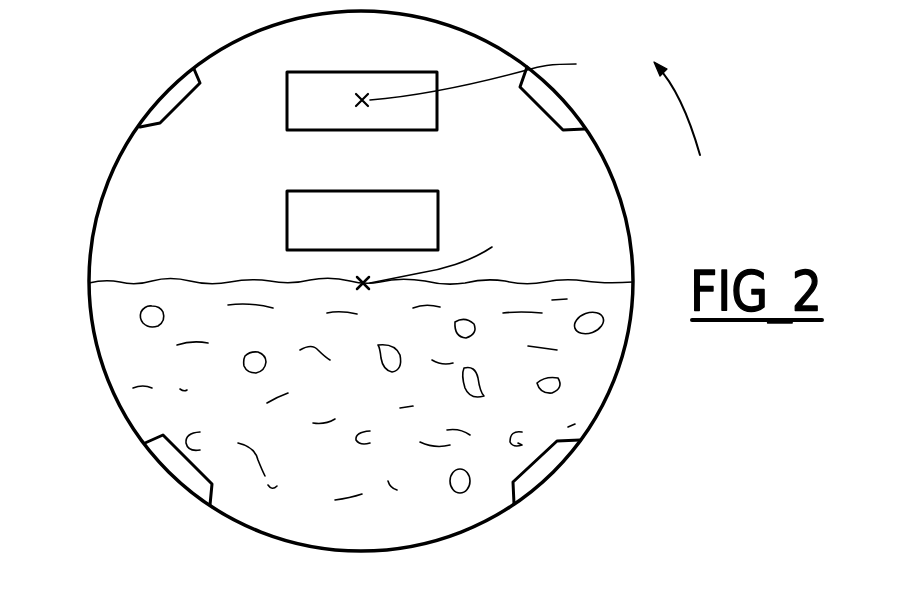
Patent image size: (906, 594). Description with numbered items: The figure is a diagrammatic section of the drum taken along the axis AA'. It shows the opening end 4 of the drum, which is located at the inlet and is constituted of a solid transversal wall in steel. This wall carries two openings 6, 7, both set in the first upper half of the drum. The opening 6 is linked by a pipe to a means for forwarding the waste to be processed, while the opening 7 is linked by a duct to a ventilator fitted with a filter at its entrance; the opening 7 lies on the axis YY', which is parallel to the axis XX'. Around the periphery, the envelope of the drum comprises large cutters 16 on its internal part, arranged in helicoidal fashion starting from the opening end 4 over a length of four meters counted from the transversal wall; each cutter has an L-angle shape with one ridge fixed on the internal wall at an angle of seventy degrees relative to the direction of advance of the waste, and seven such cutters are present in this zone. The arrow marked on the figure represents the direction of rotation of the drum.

The opening end 4 is at (90, 327).
The opening 6 is at (287, 221).
The opening 7 is at (287, 90).
The large cutters 16 is at (177, 98).